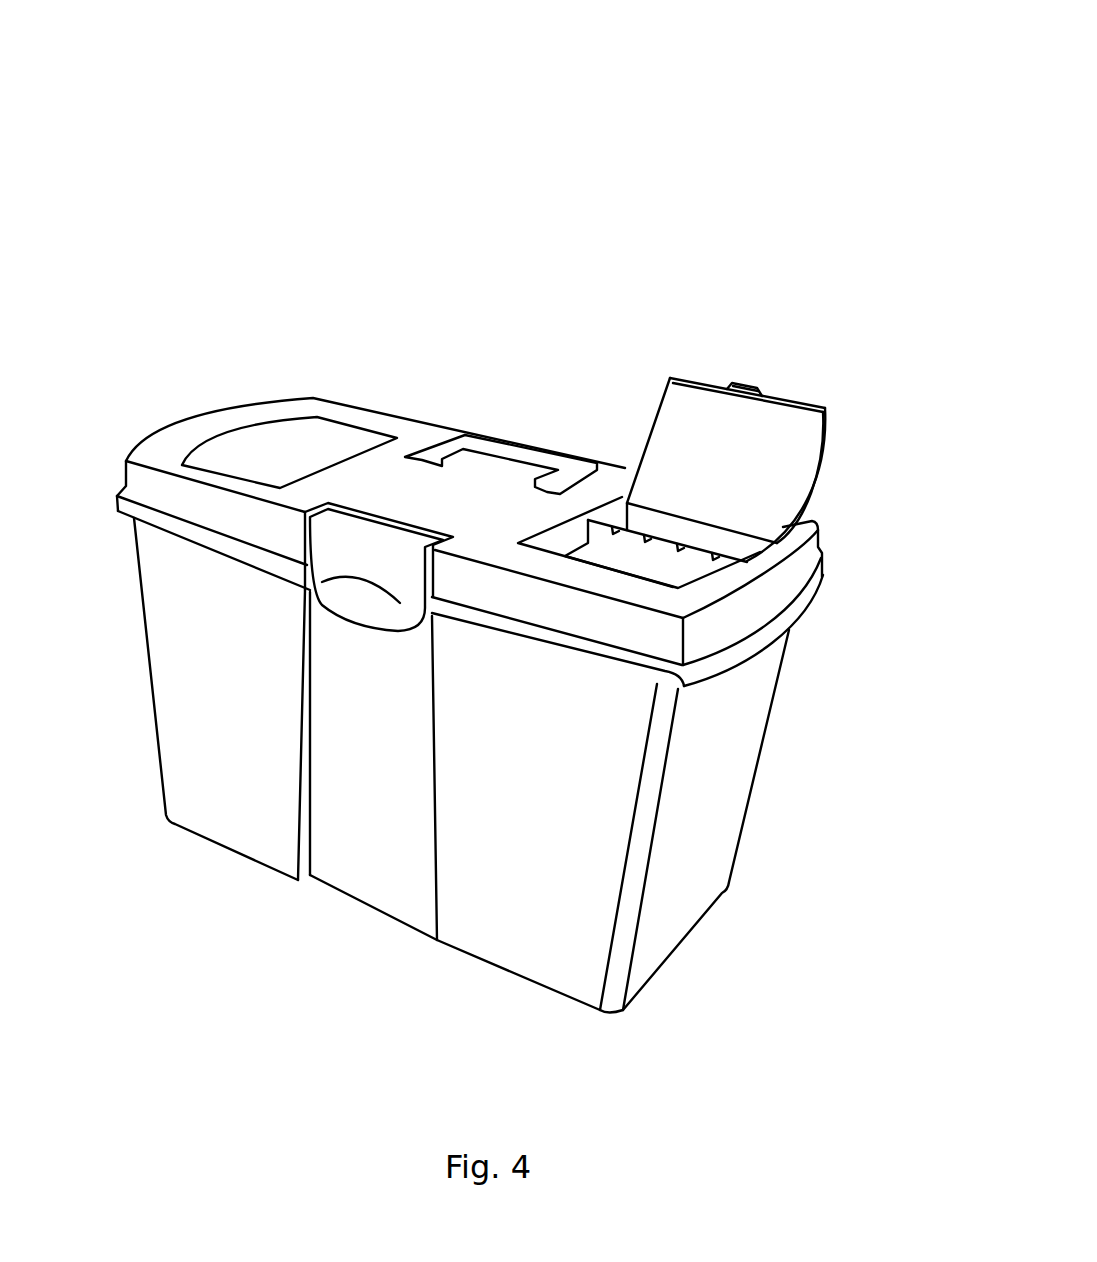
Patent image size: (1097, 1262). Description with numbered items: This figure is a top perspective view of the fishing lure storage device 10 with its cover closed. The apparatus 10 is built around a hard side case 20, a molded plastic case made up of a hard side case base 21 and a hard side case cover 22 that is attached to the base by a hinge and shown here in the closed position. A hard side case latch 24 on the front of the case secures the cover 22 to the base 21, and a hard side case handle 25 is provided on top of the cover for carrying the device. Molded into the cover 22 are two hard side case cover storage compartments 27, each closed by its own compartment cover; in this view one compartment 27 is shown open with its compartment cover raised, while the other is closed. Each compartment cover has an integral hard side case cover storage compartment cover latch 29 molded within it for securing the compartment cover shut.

The fishing lure storage device 10 is at (794, 108).
The hard side case 20 is at (160, 807).
The hard side case base 21 is at (152, 683).
The hard side case cover 22 is at (125, 475).
The hard side case latch 24 is at (307, 592).
The hard side case handle 25 is at (492, 438).
The hard side case cover storage compartment 27 is at (667, 568).
The hard side case cover storage compartment cover latch 29 is at (747, 387).